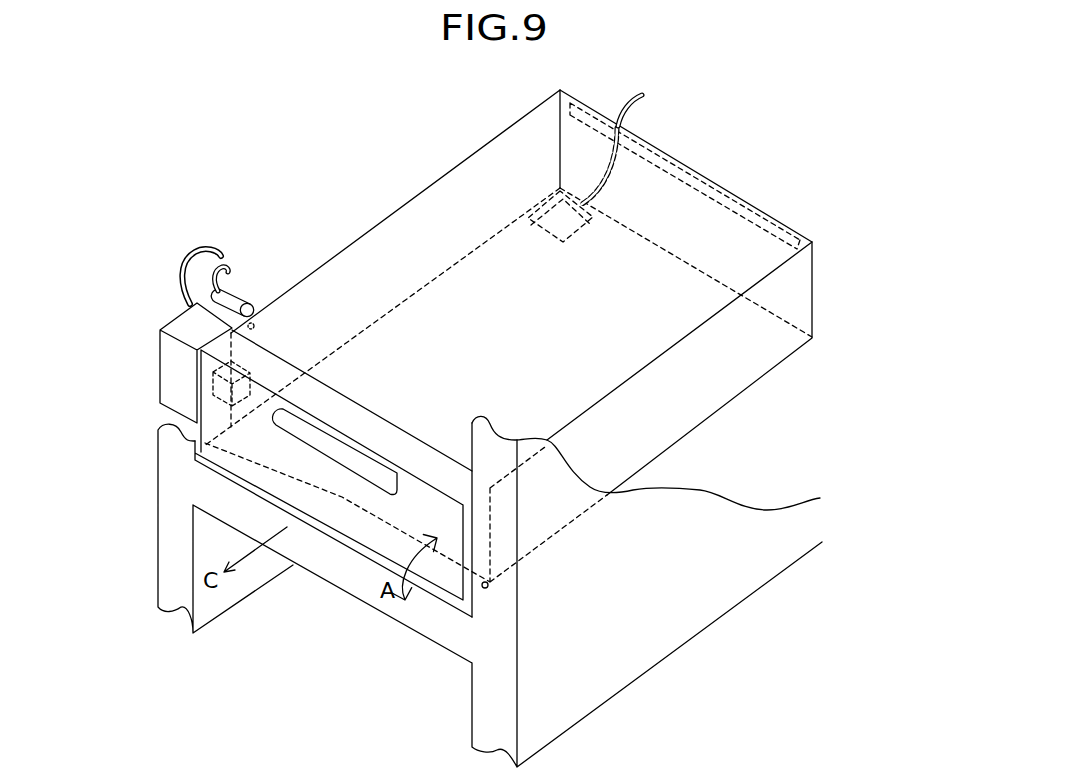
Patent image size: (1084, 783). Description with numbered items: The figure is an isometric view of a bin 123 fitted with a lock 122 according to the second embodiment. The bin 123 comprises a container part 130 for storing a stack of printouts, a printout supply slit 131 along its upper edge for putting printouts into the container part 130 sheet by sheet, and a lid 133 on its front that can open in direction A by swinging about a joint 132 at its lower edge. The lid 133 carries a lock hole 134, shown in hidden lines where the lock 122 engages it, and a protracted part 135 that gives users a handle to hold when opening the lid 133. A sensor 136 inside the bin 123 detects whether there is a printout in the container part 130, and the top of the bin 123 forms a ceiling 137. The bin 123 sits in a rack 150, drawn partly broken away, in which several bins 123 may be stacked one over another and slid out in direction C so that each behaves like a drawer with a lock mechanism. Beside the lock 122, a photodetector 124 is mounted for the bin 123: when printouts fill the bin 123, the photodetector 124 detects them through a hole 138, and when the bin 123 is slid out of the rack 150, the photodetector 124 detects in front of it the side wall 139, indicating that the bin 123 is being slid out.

The lock 122 is at (160, 376).
The bin 123 is at (817, 283).
The photodetector 124 is at (247, 291).
The container part 130 is at (663, 415).
The printout supply slit 131 is at (690, 163).
The joint 132 is at (488, 588).
The lid 133 is at (400, 453).
The lock hole 134 is at (262, 388).
The protracted part 135 is at (368, 474).
The sensor 136 is at (575, 245).
The ceiling 137 is at (630, 348).
The hole 138 is at (250, 326).
The side wall 139 is at (462, 183).
The rack 150 is at (708, 590).